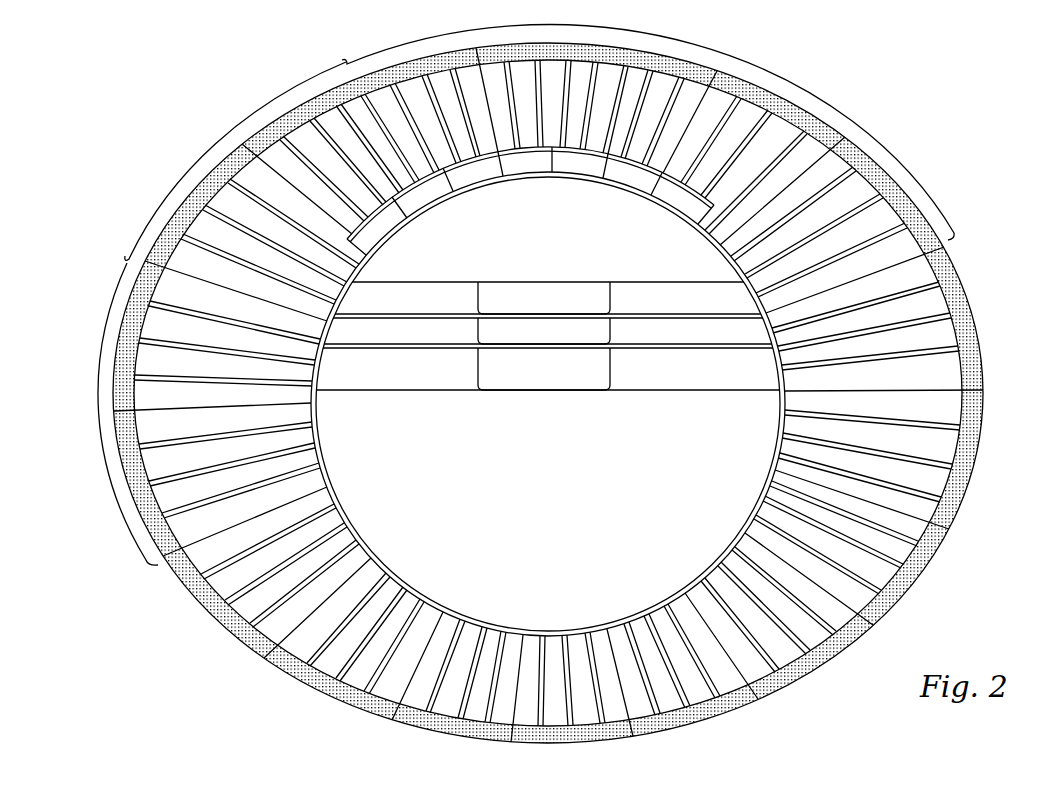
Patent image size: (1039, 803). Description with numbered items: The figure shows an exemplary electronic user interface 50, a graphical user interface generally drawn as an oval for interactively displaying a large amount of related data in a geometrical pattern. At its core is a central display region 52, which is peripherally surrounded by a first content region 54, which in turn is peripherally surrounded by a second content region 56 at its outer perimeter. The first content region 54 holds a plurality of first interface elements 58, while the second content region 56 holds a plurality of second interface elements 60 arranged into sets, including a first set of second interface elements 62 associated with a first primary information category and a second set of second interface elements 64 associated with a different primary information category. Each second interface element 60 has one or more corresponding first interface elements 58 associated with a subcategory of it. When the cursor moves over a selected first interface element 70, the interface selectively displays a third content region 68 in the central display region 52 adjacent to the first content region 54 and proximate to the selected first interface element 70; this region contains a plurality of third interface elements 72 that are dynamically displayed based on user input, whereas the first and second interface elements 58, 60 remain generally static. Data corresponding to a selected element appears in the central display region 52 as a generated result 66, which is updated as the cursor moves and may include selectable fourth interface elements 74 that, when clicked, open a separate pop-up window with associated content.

The electronic user interface 50 is at (890, 40).
The central display region 52 is at (558, 521).
The first content region 54 is at (354, 533).
The second content region 56 is at (742, 712).
The first interface elements 58 is at (417, 695).
The second interface elements 60 is at (925, 552).
The first set of second interface elements 62 is at (124, 257).
The second set of second interface elements 64 is at (674, 38).
The generated result 66 is at (541, 392).
The third content region 68 is at (622, 196).
The selected first interface element 70 is at (280, 152).
The third interface elements 72 is at (530, 165).
The selectable fourth interface elements 74 is at (412, 392).